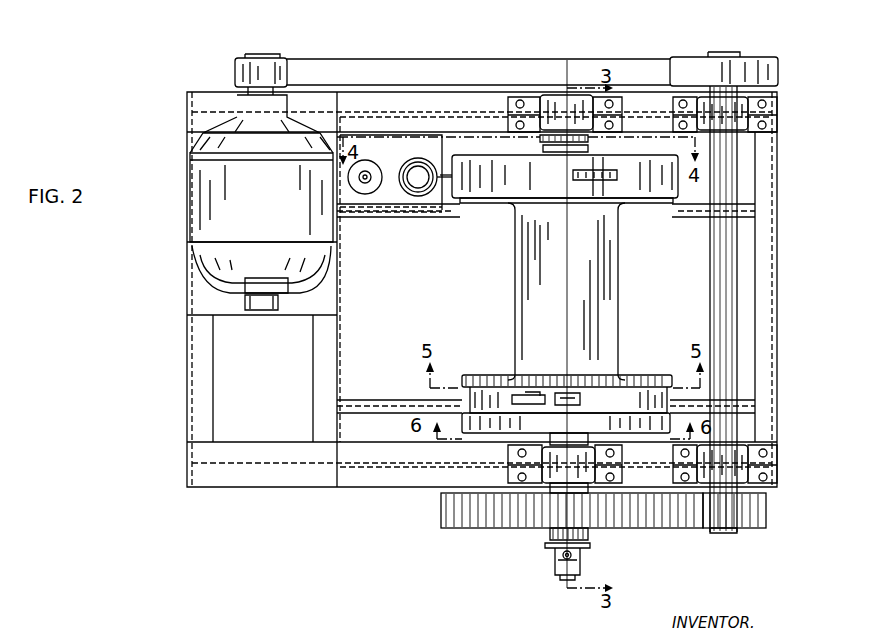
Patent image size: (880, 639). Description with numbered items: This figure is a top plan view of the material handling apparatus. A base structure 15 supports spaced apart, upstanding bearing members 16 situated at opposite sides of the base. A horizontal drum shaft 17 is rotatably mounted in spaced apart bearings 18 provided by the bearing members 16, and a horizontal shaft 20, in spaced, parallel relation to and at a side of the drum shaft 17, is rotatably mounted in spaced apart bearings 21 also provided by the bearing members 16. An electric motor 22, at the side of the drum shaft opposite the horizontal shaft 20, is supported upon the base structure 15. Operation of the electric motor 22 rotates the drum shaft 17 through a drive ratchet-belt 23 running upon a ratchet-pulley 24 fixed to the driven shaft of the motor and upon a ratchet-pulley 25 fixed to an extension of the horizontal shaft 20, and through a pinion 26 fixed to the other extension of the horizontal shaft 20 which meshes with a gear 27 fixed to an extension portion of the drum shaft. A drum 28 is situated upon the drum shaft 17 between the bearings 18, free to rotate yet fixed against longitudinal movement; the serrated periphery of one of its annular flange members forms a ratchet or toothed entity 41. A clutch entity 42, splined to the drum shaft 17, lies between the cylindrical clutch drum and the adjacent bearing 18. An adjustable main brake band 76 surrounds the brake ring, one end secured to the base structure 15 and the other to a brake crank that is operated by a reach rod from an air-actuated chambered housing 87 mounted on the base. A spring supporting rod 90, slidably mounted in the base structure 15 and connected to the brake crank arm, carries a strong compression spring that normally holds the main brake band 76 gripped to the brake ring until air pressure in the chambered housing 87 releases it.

The base structure 15 is at (197, 413).
The bearing members 16 is at (532, 108).
The drum shaft 17 is at (565, 93).
The bearings 18 is at (558, 103).
The horizontal shaft 20 is at (723, 275).
The bearings 21 is at (735, 115).
The electric motor 22 is at (210, 207).
The drive ratchet-belt 23 is at (418, 70).
The ratchet-pulley 24 is at (278, 55).
The ratchet-pulley 25 is at (692, 57).
The pinion 26 is at (758, 527).
The gear 27 is at (480, 515).
The drum 28 is at (527, 288).
The toothed entity 41 is at (645, 375).
The clutch entity 42 is at (566, 416).
The main brake band 76 is at (643, 177).
The chambered housing 87 is at (418, 196).
The spring supporting rod 90 is at (365, 194).